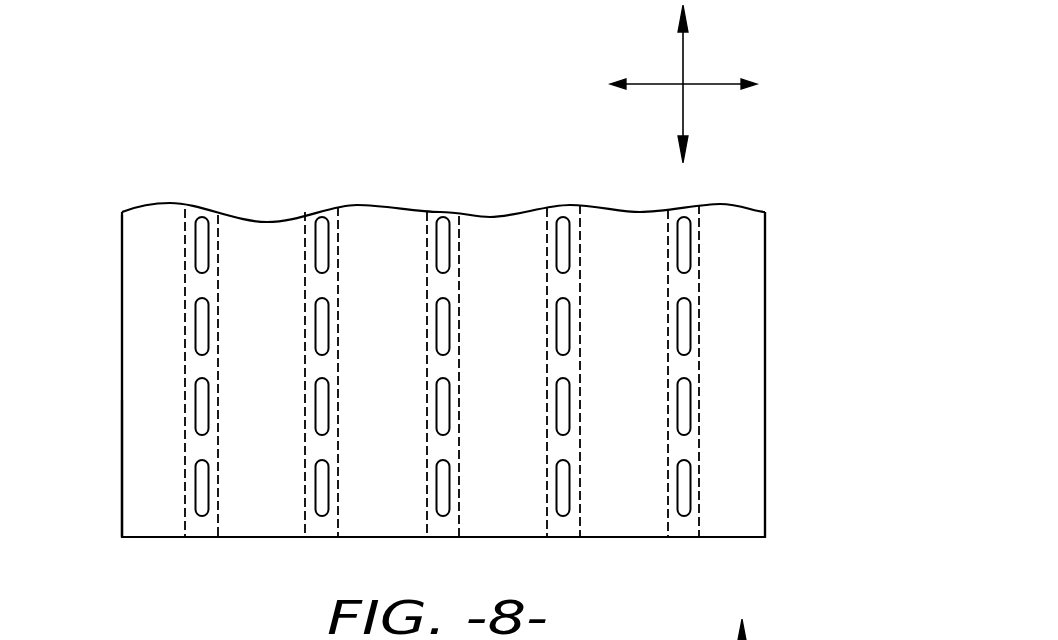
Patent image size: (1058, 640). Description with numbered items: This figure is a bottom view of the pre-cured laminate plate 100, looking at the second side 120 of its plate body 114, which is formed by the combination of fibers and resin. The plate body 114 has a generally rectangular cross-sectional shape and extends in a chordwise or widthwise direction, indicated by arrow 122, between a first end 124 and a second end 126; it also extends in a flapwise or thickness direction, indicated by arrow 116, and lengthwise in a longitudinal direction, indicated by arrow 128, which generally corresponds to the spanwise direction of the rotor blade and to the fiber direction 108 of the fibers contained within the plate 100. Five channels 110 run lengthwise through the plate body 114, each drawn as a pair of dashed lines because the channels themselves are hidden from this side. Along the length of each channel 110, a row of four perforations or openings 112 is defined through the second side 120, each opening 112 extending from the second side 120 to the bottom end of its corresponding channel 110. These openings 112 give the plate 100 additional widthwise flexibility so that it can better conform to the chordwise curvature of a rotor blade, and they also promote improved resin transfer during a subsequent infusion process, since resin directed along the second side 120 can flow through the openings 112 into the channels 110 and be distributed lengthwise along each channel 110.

The pre-cured laminate plate 100 is at (176, 134).
The fiber direction 108 is at (738, 84).
The longitudinal direction 128 is at (683, 60).
The channel 110 is at (218, 233).
The opening 112 is at (209, 392).
The plate body 114 is at (147, 343).
The flapwise or thickness direction 116 is at (769, 629).
The second side 120 is at (255, 515).
The chordwise or widthwise direction 122 is at (657, 82).
The first end 124 is at (122, 447).
The second end 126 is at (765, 300).